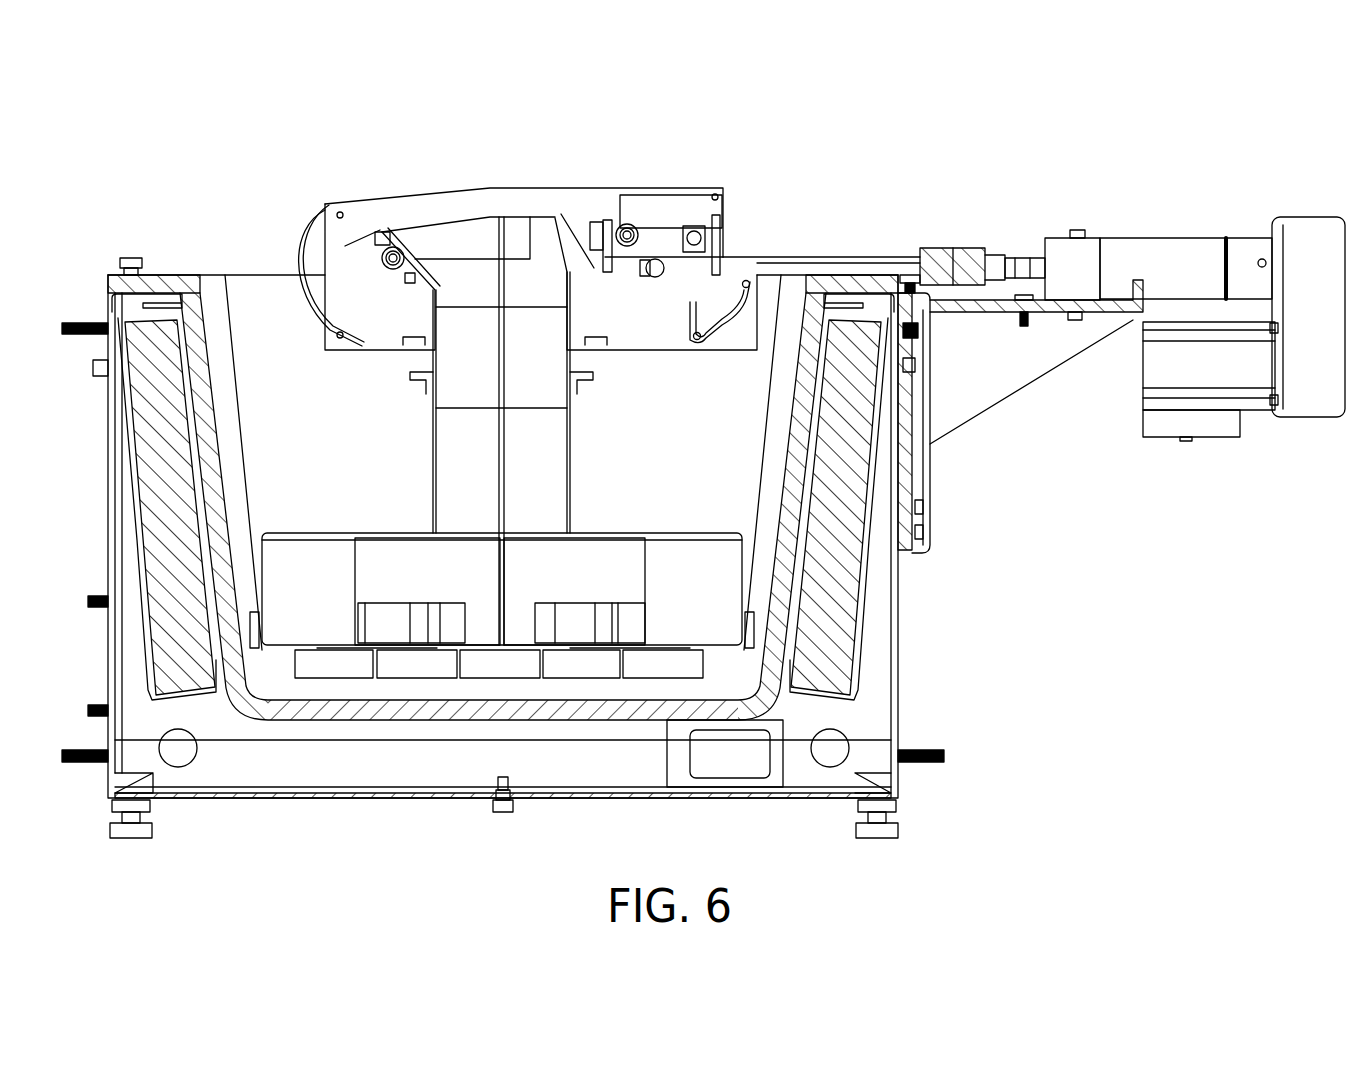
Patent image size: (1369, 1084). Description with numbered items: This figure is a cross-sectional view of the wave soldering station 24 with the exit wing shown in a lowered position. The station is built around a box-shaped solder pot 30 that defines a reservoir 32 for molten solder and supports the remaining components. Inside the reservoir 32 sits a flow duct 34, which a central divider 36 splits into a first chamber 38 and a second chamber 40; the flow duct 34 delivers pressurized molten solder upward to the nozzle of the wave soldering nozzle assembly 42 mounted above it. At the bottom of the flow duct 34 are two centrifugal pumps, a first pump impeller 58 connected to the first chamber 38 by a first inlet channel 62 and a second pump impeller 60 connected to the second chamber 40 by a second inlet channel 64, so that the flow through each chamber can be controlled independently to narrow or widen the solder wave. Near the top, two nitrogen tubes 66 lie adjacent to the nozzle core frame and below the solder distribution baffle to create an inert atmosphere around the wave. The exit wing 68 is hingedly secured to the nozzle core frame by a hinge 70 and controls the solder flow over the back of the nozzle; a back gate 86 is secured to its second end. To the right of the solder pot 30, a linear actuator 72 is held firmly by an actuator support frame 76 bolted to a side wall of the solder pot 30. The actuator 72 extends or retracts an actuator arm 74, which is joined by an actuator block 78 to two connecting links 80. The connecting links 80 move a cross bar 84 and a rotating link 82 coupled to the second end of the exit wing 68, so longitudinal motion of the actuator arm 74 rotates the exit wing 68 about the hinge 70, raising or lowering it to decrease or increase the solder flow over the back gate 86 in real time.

The wave soldering station 24 is at (306, 150).
The solder pot 30 is at (108, 420).
The reservoir 32 is at (790, 620).
The flow duct 34 is at (430, 415).
The divider 36 is at (504, 505).
The first chamber 38 is at (465, 458).
The second chamber 40 is at (540, 430).
The wave soldering nozzle assembly 42 is at (524, 196).
The first pump impeller 58 is at (388, 616).
The second pump impeller 60 is at (595, 612).
The first inlet channel 62 is at (480, 590).
The second inlet channel 64 is at (520, 610).
The nitrogen tubes 66 is at (392, 246).
The exit wing 68 is at (665, 228).
The hinge 70 is at (604, 220).
The actuator 72 is at (1175, 243).
The actuator arm 74 is at (1035, 257).
The actuator support frame 76 is at (932, 470).
The actuator block 78 is at (962, 256).
The connecting links 80 is at (835, 257).
The rotating link 82 is at (675, 250).
The cross bar 84 is at (652, 272).
The back gate 86 is at (720, 238).